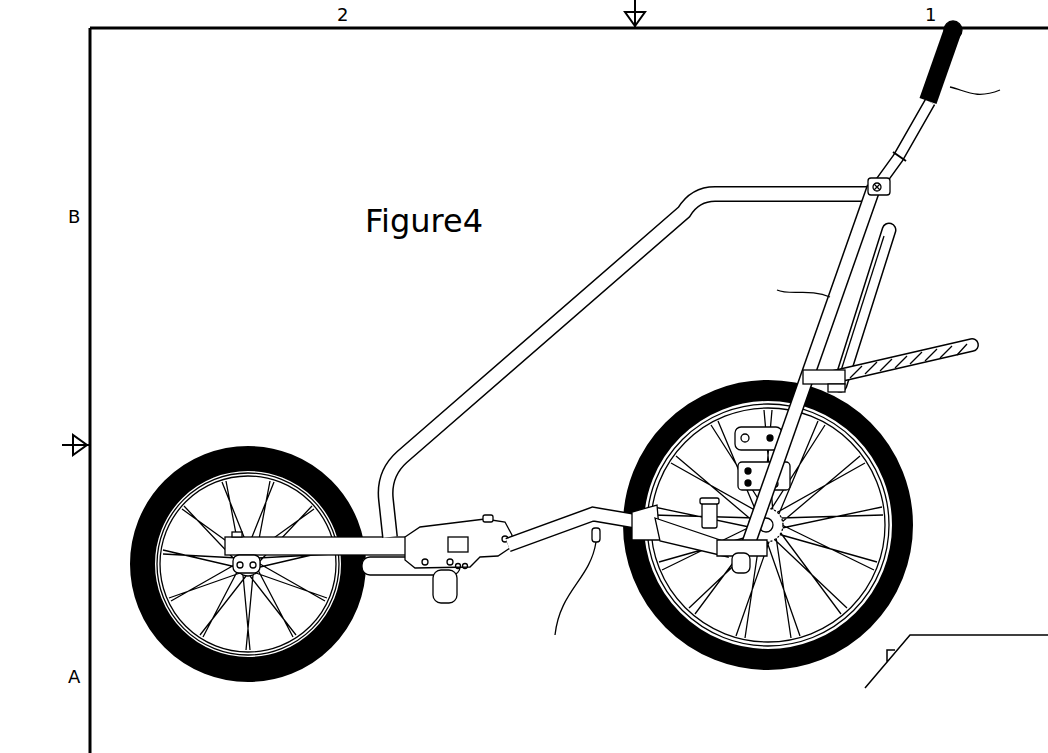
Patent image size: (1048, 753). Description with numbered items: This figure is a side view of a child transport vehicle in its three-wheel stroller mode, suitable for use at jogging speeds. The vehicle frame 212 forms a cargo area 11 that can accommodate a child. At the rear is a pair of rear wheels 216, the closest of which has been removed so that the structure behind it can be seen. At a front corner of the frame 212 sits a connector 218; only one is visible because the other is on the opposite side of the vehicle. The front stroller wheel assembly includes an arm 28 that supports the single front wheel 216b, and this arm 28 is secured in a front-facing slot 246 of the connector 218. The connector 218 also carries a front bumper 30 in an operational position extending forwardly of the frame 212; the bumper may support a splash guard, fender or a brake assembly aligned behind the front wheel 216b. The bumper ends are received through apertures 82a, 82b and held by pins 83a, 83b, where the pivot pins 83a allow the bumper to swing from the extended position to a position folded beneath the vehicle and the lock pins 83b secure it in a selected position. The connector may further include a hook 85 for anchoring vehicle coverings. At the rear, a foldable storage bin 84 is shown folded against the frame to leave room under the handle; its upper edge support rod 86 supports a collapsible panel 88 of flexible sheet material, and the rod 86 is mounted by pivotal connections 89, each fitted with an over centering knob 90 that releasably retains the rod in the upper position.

The cargo area 11 is at (683, 355).
The arm 28 is at (365, 535).
The front bumper 30 is at (385, 576).
The aperture 82a is at (458, 533).
The aperture 82b is at (430, 552).
The pivot pin 83a is at (465, 570).
The lock pin 83b is at (459, 572).
The storage bin 84 is at (884, 287).
The hook 85 is at (407, 530).
The upper edge support rod 86 is at (883, 246).
The collapsible panel 88 is at (857, 336).
The pivotal connection 89 is at (805, 375).
The over centering knob 90 is at (842, 384).
The vehicle frame 212 is at (490, 363).
The rear wheel 216 is at (915, 498).
The front wheel 216b is at (282, 450).
The connector 218 is at (475, 570).
The front-facing slot 246 is at (393, 576).